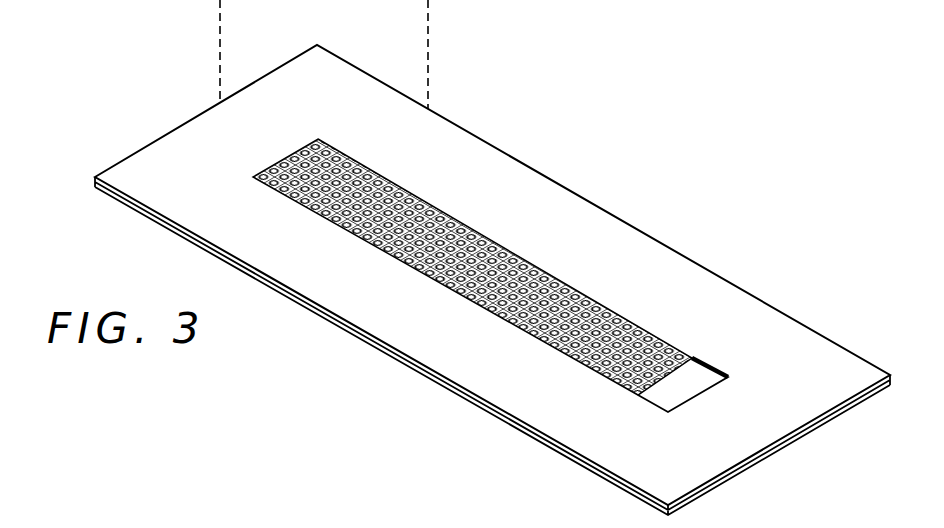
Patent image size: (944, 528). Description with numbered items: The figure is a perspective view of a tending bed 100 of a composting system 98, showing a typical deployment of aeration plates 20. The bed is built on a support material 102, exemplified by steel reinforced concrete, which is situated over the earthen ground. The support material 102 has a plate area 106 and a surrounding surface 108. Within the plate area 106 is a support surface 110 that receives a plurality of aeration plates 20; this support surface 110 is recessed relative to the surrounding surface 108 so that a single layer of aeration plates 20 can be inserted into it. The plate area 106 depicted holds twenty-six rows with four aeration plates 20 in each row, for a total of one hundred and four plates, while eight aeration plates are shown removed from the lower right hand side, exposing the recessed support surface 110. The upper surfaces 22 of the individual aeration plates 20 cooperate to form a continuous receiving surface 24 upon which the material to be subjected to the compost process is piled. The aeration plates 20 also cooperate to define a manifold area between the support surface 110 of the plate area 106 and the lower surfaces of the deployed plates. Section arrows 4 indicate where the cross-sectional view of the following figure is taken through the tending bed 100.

The section line 4 is at (193, 52).
The aeration plate 20 is at (613, 308).
The upper surface 22 is at (567, 282).
The receiving surface 24 is at (437, 205).
The composting system 98 is at (620, 182).
The tending bed 100 is at (297, 365).
The support material 102 is at (468, 353).
The plate area 106 is at (700, 377).
The surrounding surface 108 is at (697, 318).
The support surface 110 is at (675, 398).